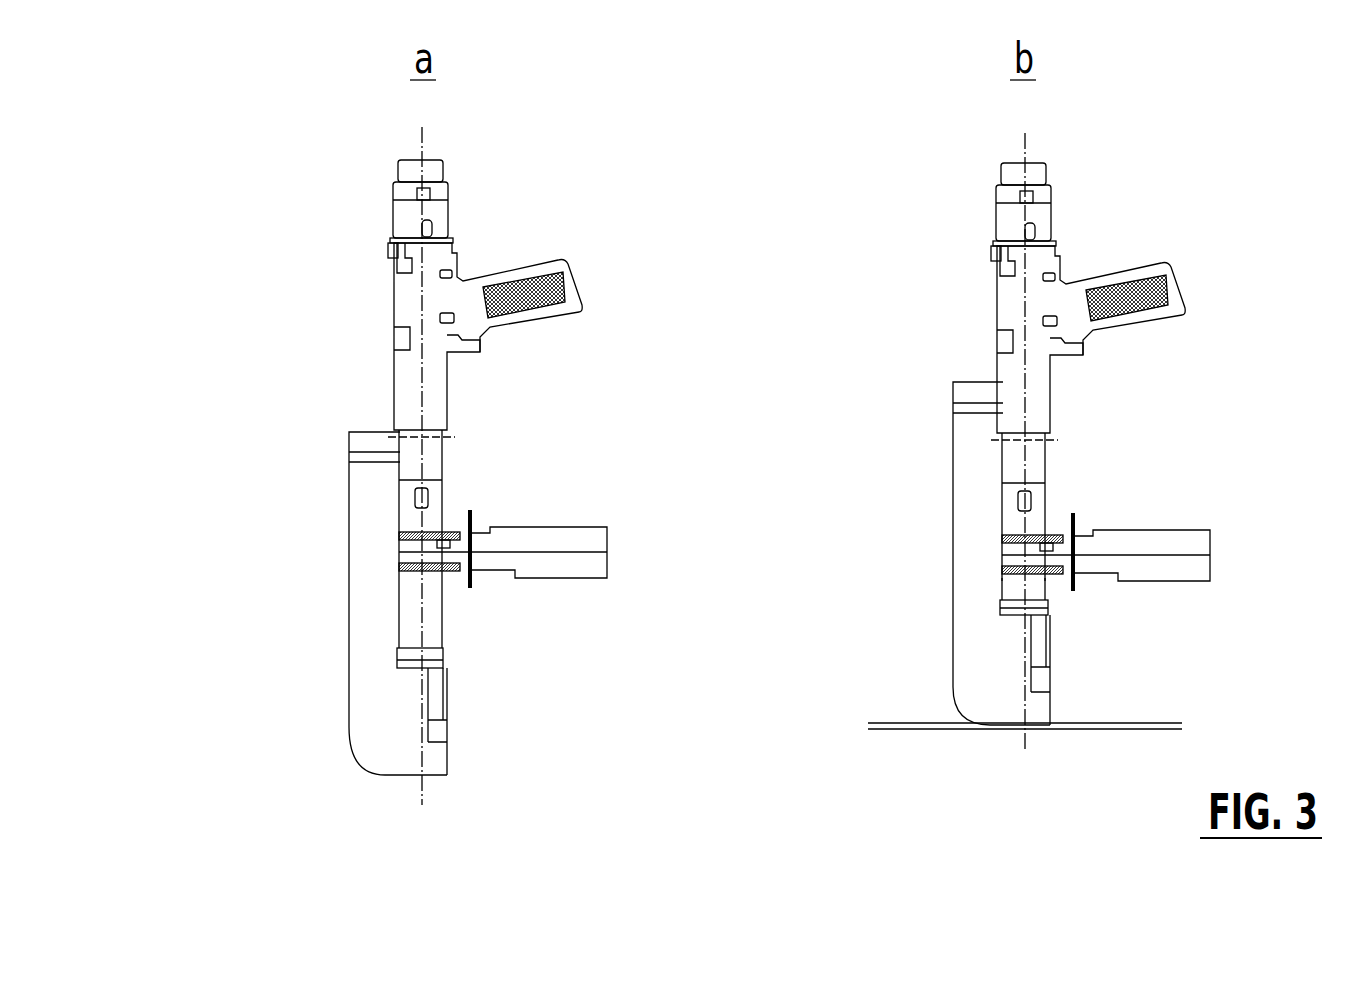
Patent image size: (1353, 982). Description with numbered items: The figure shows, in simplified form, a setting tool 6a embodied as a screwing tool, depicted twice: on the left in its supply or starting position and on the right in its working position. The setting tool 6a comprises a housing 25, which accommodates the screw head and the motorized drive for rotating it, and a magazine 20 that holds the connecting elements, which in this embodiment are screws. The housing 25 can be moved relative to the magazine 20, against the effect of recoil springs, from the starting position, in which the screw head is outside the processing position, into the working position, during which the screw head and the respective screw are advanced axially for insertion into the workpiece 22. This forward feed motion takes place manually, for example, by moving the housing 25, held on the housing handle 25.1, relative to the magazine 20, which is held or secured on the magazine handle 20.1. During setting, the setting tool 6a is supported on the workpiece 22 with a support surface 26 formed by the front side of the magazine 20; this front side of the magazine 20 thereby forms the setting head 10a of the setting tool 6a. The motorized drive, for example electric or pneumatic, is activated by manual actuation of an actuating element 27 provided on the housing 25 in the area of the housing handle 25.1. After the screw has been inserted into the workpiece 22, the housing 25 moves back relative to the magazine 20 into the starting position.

The setting tool 6a is at (330, 418).
The setting head 10a is at (370, 772).
The magazine 20 is at (362, 536).
The magazine handle 20.1 is at (578, 565).
The workpiece 22 is at (917, 731).
The housing 25 is at (455, 290).
The housing handle 25.1 is at (1173, 293).
The support surface 26 is at (413, 787).
The actuating element 27 is at (1067, 358).